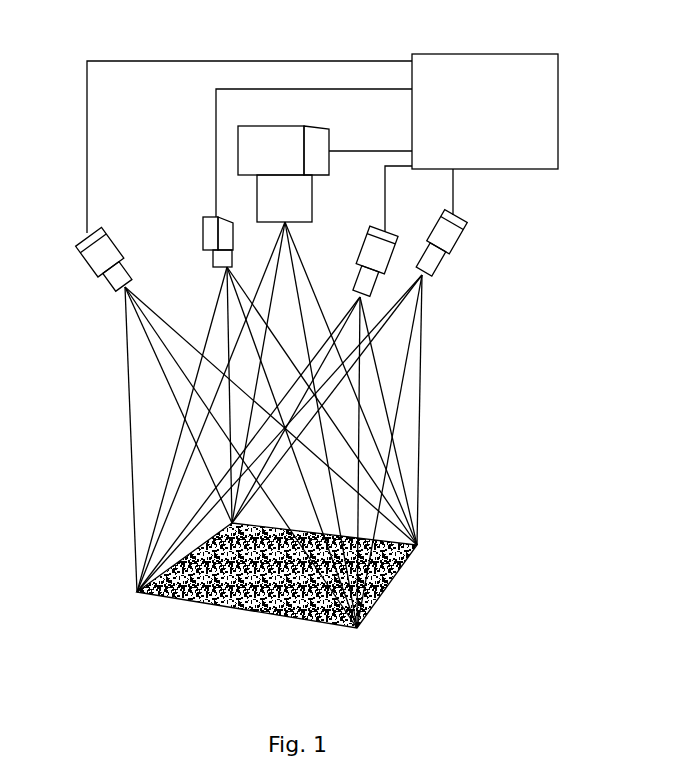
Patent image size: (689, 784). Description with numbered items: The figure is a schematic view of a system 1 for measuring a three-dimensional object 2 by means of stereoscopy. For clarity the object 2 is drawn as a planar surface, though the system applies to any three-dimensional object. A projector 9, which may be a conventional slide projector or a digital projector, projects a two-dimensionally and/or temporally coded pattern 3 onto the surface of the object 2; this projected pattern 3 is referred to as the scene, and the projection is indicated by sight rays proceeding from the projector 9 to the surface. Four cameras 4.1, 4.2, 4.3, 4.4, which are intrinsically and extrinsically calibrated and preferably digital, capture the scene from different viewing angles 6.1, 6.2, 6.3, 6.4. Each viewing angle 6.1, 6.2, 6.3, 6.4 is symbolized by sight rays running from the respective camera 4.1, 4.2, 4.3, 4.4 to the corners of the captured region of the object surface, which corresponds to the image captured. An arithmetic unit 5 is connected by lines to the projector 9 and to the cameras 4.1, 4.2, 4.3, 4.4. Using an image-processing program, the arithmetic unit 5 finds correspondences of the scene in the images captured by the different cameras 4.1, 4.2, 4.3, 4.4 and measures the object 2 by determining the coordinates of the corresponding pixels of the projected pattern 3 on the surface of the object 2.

The system 1 is at (141, 33).
The three-dimensional object 2 is at (268, 632).
The coded pattern 3 is at (202, 597).
The camera 4.1 is at (88, 250).
The camera 4.2 is at (212, 232).
The camera 4.3 is at (365, 257).
The camera 4.4 is at (447, 236).
The arithmetic unit 5 is at (472, 79).
The viewing angle 6.1 is at (133, 325).
The viewing angle 6.2 is at (234, 297).
The viewing angle 6.3 is at (349, 327).
The viewing angle 6.4 is at (417, 305).
The projector 9 is at (247, 152).